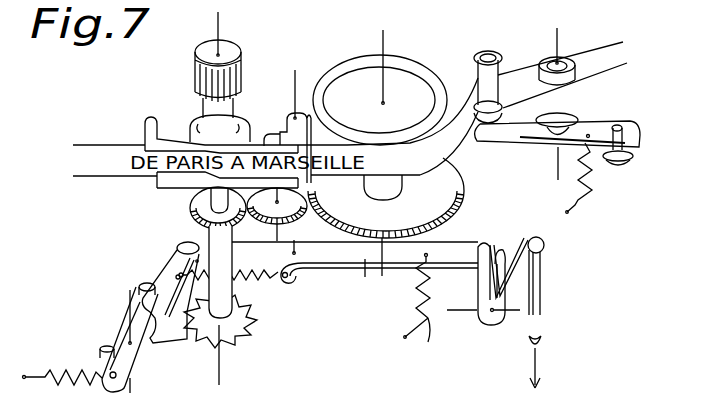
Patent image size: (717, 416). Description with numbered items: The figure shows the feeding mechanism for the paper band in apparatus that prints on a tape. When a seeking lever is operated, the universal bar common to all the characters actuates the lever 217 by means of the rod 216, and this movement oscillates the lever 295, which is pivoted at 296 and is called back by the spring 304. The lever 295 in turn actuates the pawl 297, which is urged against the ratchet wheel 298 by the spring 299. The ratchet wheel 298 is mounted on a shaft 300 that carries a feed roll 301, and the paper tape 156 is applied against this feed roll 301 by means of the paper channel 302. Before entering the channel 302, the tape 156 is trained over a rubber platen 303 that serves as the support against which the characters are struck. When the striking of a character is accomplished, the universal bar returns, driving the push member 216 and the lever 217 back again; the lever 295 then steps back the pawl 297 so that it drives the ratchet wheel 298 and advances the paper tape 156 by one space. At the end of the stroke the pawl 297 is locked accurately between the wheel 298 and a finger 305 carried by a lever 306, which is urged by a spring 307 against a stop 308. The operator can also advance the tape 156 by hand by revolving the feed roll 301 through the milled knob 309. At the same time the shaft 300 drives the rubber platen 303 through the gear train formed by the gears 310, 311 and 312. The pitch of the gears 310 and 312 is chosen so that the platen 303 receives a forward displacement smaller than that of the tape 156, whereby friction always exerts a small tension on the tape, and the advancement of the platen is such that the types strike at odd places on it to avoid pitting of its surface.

The paper tape 156 is at (603, 63).
The rod 216 is at (543, 293).
The lever 217 is at (488, 291).
The lever 295 is at (365, 277).
The pivot 296 is at (297, 282).
The pawl 297 is at (175, 267).
The ratchet wheel 298 is at (243, 332).
The spring 299 is at (274, 286).
The shaft 300 is at (210, 196).
The feed roll 301 is at (238, 120).
The paper channel 302 is at (264, 134).
The rubber platen 303 is at (430, 70).
The spring 304 is at (427, 309).
The finger 305 is at (139, 283).
The lever 306 is at (123, 336).
The spring 307 is at (62, 380).
The stop 308 is at (100, 355).
The milled knob 309 is at (245, 60).
The gear 310 is at (242, 200).
The gear 311 is at (200, 227).
The gear 312 is at (450, 192).